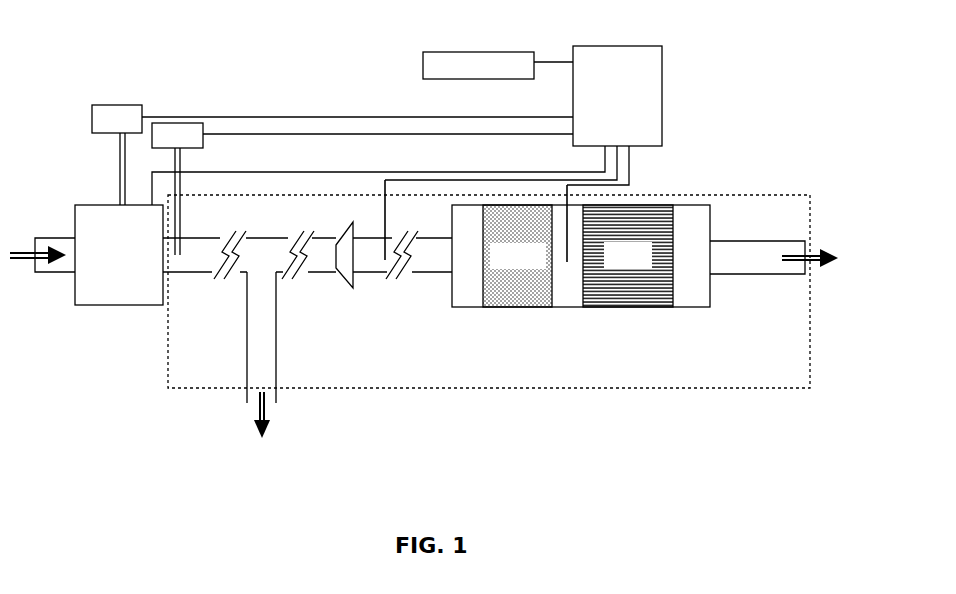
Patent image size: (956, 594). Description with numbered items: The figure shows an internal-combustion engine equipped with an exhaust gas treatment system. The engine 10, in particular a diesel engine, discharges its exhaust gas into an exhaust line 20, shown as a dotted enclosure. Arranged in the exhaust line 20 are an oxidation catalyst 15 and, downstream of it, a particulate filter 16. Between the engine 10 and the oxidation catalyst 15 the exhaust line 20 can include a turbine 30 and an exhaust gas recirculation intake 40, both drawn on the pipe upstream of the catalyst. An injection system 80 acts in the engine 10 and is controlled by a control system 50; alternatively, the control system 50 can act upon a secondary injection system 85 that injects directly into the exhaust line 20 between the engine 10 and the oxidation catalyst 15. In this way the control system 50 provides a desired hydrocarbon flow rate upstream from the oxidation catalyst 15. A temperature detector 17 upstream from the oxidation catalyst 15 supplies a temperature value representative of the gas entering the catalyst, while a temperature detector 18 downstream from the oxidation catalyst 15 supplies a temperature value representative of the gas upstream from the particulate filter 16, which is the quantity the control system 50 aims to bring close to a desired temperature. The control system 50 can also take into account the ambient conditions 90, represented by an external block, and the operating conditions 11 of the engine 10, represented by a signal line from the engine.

The engine 10 is at (102, 304).
The operating conditions 11 is at (347, 172).
The oxidation catalyst 15 is at (517, 283).
The particulate filter 16 is at (640, 285).
The temperature detector 17 is at (385, 262).
The temperature detector 18 is at (567, 264).
The exhaust line 20 is at (186, 387).
The turbine 30 is at (342, 278).
The exhaust gas recirculation intake 40 is at (253, 295).
The control system 50 is at (667, 62).
The injection system 80 is at (106, 105).
The secondary injection system 85 is at (205, 125).
The ambient conditions 90 is at (445, 43).